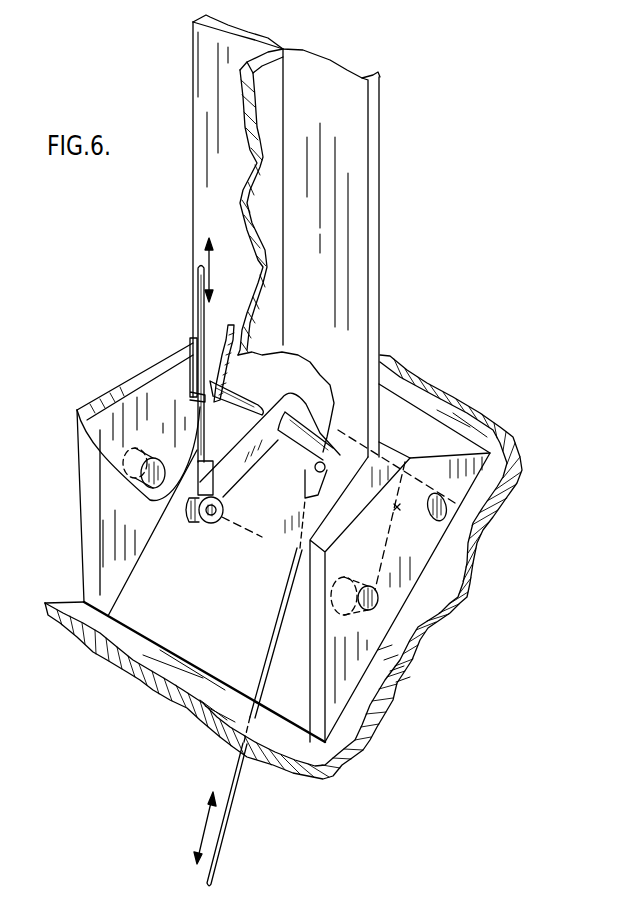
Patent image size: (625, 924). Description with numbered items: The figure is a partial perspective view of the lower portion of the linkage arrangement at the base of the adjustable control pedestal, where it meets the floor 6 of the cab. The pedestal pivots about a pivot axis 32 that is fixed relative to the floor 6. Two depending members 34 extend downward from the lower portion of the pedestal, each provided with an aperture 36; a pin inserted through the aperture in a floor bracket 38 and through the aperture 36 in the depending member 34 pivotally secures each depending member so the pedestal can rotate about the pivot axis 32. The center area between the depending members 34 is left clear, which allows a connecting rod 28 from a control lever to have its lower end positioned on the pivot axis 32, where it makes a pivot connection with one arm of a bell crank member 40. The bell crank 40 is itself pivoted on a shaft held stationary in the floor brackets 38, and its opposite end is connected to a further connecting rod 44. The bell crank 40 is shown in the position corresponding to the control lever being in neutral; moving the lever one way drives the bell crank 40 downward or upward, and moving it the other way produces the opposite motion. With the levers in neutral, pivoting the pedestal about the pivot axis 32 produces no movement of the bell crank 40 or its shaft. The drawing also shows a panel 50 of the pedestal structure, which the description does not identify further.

The floor 6 is at (348, 750).
The connecting rod 28 is at (197, 308).
The pivot axis 32 is at (413, 630).
The depending member 34 is at (340, 507).
The aperture 36 is at (170, 486).
The floor bracket 38 is at (343, 683).
The bell crank member 40 is at (307, 420).
The further connecting rod 44 is at (233, 813).
The vertical panel 50 is at (270, 97).